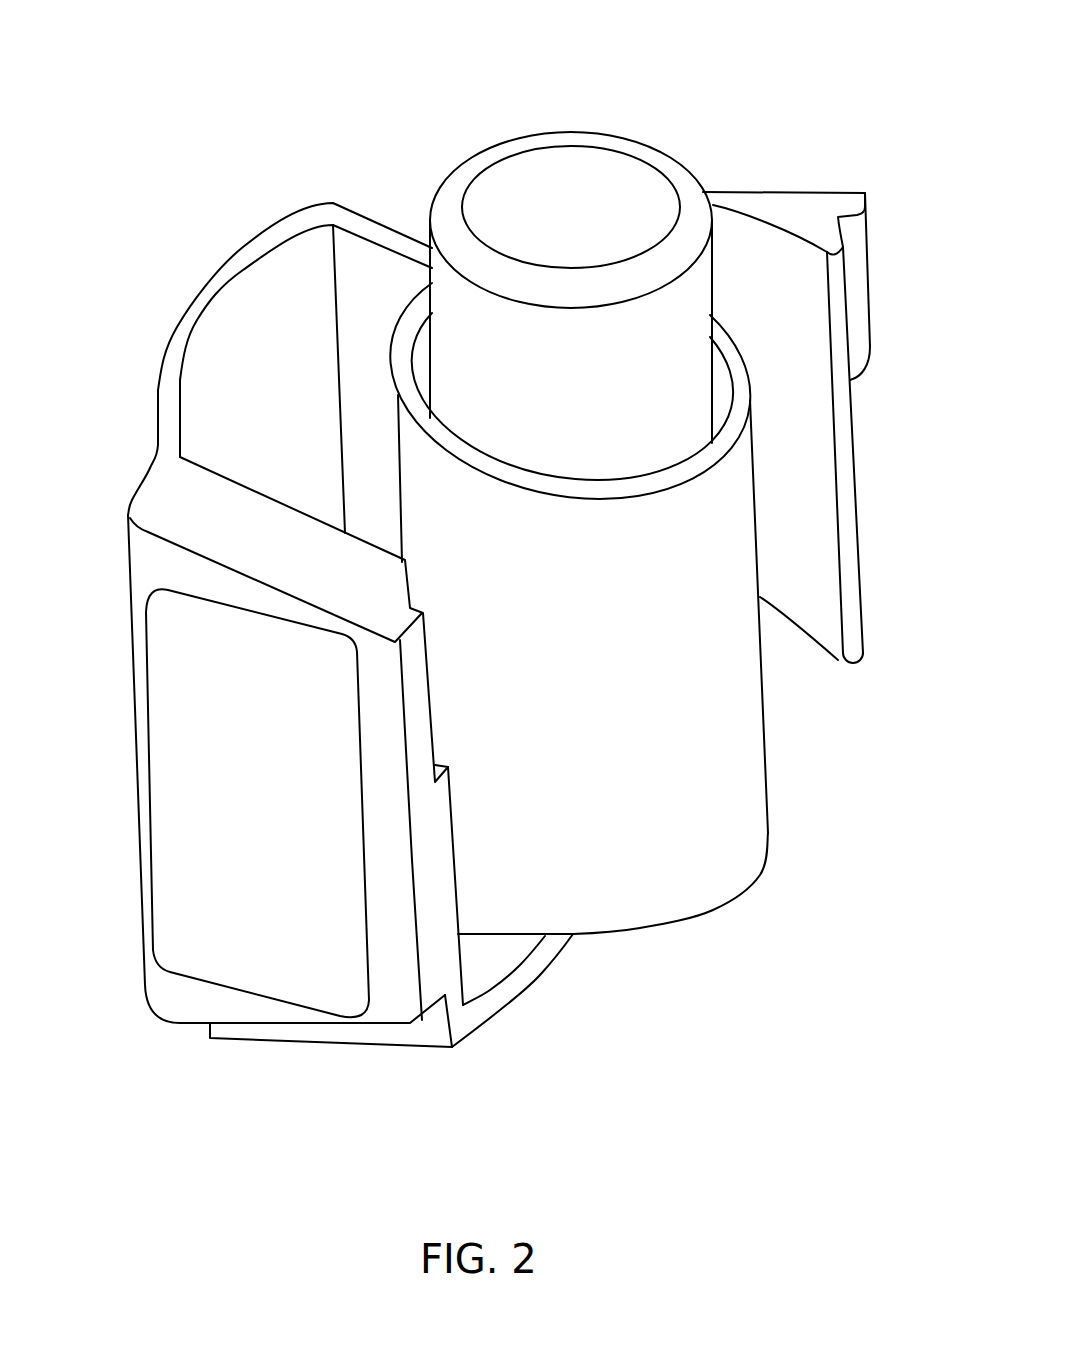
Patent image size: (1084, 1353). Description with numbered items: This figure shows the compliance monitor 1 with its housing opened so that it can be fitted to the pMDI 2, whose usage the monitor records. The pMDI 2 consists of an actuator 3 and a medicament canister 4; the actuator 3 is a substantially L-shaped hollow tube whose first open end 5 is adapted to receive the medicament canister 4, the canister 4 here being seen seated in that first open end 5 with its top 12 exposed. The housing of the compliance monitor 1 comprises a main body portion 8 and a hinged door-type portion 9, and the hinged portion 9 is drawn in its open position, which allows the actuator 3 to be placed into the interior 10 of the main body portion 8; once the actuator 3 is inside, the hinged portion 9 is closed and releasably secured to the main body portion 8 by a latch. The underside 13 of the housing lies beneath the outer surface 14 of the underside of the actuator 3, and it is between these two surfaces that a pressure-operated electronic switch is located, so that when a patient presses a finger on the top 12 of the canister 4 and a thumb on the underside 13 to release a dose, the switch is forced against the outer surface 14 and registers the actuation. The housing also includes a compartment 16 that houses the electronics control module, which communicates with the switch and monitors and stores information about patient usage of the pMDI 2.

The compliance monitor 1 is at (108, 444).
The pMDI 2 is at (796, 735).
The actuator 3 is at (615, 714).
The medicament canister 4 is at (596, 397).
The first open end 5 is at (519, 444).
The main body portion 8 is at (118, 541).
The hinged door-type portion 9 is at (894, 293).
The interior 10 is at (232, 340).
The top of the canister 12 is at (580, 165).
The underside of the housing 13 is at (305, 1068).
The outer surface of the underside of the actuator 14 is at (640, 938).
The compartment 16 is at (198, 877).